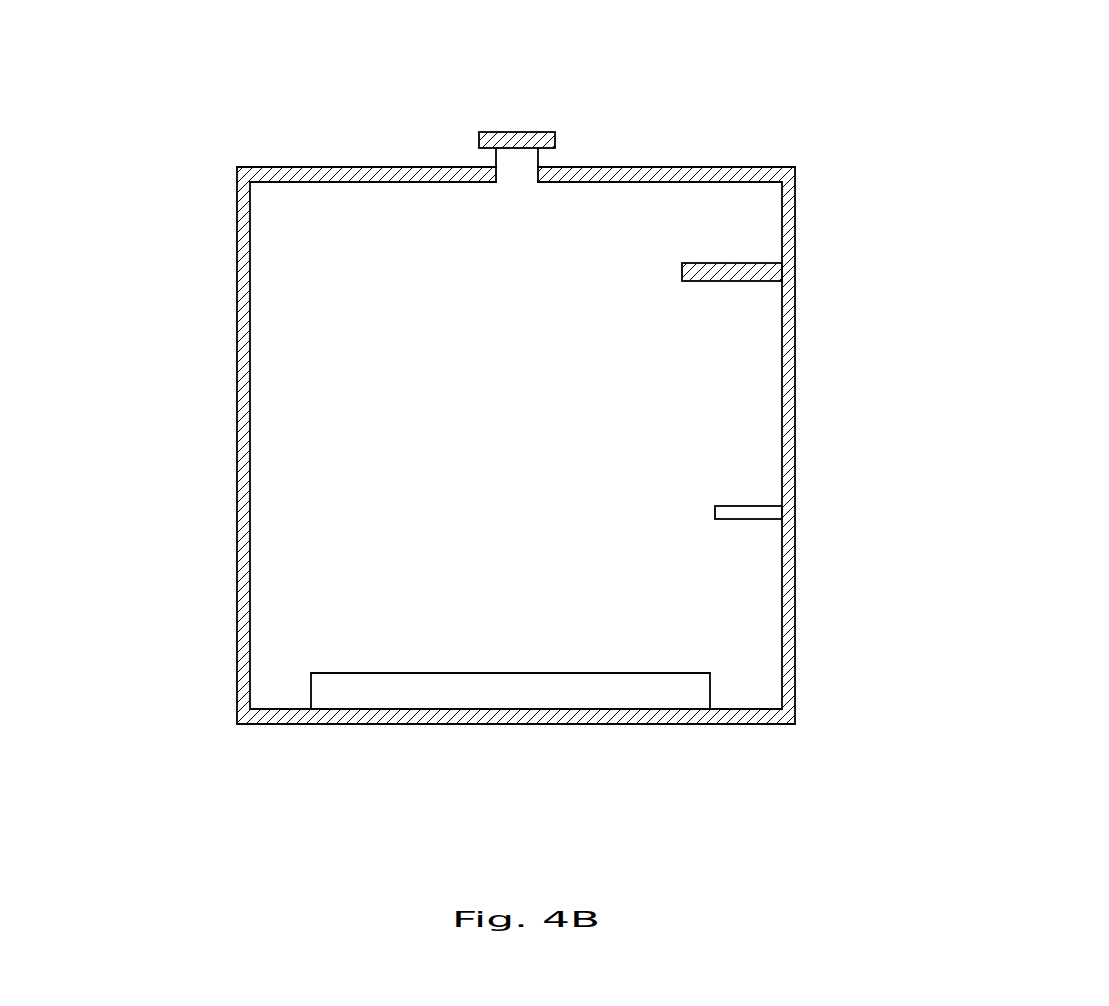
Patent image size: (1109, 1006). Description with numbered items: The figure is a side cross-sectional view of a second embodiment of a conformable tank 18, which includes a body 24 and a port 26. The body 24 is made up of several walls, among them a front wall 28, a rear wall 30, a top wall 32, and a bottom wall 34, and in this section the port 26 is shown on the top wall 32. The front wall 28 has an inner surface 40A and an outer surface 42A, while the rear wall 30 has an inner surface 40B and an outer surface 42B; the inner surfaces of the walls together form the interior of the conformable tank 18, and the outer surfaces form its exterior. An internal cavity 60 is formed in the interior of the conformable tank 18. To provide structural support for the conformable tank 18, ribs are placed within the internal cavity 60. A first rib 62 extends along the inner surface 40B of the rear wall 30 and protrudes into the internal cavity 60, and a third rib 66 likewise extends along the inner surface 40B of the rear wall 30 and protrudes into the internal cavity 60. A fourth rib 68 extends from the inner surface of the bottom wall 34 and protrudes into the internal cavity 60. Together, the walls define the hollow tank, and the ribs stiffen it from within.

The conformable tank 18 is at (858, 70).
The body 24 is at (217, 211).
The port 26 is at (515, 138).
The front wall 28 is at (245, 628).
The rear wall 30 is at (796, 583).
The top wall 32 is at (705, 167).
The bottom wall 34 is at (523, 722).
The inner surface 40A is at (258, 375).
The inner surface 40B is at (775, 341).
The outer surface 42A is at (226, 451).
The outer surface 42B is at (806, 435).
The internal cavity 60 is at (723, 597).
The first rib 62 is at (730, 268).
The third rib 66 is at (760, 505).
The fourth rib 68 is at (583, 687).